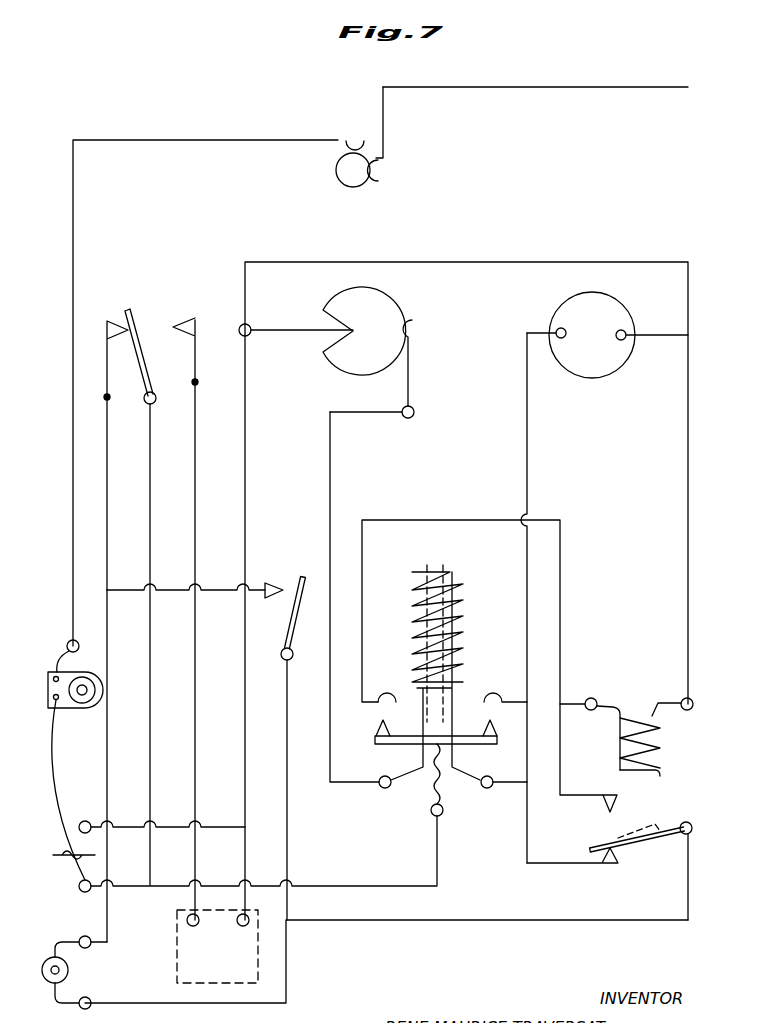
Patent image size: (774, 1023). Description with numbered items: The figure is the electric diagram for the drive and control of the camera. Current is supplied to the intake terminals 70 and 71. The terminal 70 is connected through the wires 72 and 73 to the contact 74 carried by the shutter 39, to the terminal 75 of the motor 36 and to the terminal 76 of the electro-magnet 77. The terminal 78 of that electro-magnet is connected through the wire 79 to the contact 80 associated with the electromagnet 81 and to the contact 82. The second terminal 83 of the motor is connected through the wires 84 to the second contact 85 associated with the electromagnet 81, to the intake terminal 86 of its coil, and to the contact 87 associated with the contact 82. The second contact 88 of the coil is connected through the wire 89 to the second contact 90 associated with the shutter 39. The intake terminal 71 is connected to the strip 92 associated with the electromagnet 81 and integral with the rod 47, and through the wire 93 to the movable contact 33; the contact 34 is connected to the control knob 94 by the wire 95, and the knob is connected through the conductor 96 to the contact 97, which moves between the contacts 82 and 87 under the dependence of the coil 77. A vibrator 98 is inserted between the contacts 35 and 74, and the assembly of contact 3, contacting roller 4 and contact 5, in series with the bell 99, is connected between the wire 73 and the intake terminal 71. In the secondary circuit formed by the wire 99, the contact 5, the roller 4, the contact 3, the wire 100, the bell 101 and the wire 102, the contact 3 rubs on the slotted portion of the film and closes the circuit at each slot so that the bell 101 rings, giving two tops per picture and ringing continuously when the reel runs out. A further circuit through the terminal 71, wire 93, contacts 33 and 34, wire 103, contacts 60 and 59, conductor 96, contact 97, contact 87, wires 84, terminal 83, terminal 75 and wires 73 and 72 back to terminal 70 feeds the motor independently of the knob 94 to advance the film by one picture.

The contact 3 is at (338, 140).
The contacting roller 4 is at (352, 182).
The contact 5 is at (386, 158).
The movable contact 33 is at (146, 373).
The contact 34 is at (107, 366).
The contact 35 is at (196, 366).
The motor 36 is at (602, 368).
The shutter 39 is at (383, 313).
The rod 47 is at (434, 570).
The contact 59 is at (290, 632).
The contact 60 is at (266, 581).
The intake terminal 70 is at (85, 821).
The intake terminal 71 is at (84, 892).
The wire 72 is at (222, 832).
The wire 73 is at (548, 262).
The contact 74 is at (296, 334).
The terminal 75 is at (627, 333).
The terminal 76 is at (687, 710).
The electro-magnet 77 is at (662, 776).
The terminal 78 is at (595, 698).
The wire 79 is at (457, 520).
The contact 80 is at (388, 696).
The electromagnet 81 is at (464, 630).
The contact 82 is at (608, 793).
The second terminal 83 is at (555, 331).
The wires 84 is at (528, 441).
The second contact 85 is at (494, 695).
The intake terminal 86 is at (487, 788).
The contact 87 is at (610, 866).
The second contact 88 is at (385, 788).
The wire 89 is at (331, 504).
The second contact 90 is at (415, 412).
The strip 92 is at (476, 742).
The wire 93 is at (150, 740).
The control knob 94 is at (68, 970).
The wire 95 is at (108, 793).
The conductor 96 is at (569, 921).
The contact 97 is at (664, 838).
The vibrator 98 is at (185, 960).
The bell 99 is at (564, 87).
The wire 100 is at (75, 214).
The bell 101 is at (65, 676).
The wire 102 is at (52, 770).
The wire 103 is at (166, 588).